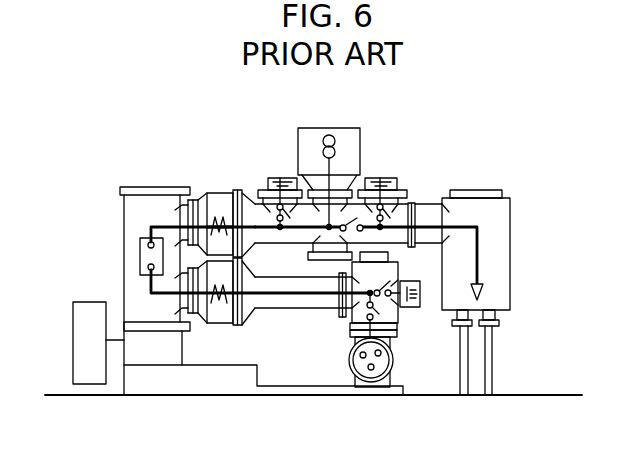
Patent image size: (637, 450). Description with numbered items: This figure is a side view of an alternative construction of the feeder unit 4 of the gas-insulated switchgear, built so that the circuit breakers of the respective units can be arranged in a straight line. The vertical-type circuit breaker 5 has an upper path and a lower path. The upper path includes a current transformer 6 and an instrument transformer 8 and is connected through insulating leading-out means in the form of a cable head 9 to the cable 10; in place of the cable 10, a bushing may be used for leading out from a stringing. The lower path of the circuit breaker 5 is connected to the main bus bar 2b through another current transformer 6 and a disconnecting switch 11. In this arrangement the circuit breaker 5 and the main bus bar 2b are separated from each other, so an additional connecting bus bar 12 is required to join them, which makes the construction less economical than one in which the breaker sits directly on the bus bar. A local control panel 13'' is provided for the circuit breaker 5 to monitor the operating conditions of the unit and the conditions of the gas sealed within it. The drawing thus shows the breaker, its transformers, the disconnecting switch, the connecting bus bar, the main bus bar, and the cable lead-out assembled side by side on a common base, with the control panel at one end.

The feeder unit 4 is at (457, 123).
The circuit breaker 5 is at (140, 266).
The current transformer 6 is at (220, 210).
The instrument transformer 8 is at (337, 150).
The cable head 9 is at (478, 252).
The cable 10 is at (492, 357).
The disconnecting switch 11 is at (393, 307).
The connecting bus bar 12 is at (278, 312).
The main bus bar 2b is at (349, 357).
The local control panel 13'' is at (75, 342).